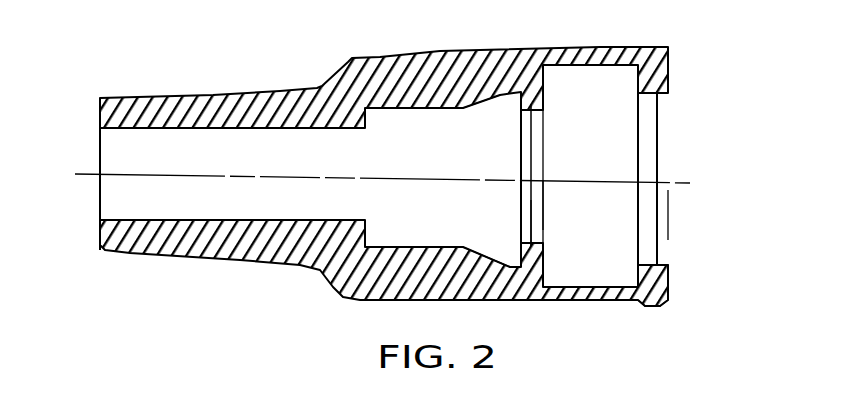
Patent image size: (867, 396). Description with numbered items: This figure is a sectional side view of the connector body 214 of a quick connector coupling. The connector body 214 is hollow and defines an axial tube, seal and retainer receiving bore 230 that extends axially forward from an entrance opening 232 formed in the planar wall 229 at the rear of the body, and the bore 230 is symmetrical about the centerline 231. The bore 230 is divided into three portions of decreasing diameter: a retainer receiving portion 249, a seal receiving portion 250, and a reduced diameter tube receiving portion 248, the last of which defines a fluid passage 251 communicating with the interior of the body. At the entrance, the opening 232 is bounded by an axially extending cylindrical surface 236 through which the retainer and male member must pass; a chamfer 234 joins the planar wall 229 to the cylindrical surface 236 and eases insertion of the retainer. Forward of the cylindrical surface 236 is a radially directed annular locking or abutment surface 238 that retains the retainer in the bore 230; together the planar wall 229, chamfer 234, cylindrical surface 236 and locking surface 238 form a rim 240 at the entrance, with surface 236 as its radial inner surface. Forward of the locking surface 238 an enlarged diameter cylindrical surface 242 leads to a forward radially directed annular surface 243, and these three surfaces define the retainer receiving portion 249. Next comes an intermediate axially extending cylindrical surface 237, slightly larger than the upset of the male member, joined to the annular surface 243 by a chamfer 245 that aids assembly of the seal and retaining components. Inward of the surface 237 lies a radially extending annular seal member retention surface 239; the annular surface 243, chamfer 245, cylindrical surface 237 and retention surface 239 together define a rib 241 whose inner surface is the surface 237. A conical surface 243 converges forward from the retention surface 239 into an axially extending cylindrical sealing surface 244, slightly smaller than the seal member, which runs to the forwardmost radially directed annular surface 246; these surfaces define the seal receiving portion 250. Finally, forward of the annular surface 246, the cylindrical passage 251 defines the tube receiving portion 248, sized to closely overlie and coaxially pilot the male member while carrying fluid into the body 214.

The connector body 214 is at (240, 76).
The planar wall 229 is at (670, 288).
The bore 230 is at (615, 149).
The centerline 231 is at (628, 182).
The entrance opening 232 is at (674, 215).
The chamfer 234 is at (670, 98).
The axially extending cylindrical surface 236 is at (657, 116).
The intermediate axially extending cylindrical surface 237 is at (543, 210).
The radially directed annular locking surface 238 is at (637, 78).
The radially extending annular seal member retention surface 239 is at (518, 252).
The rim 240 is at (660, 241).
The rib 241 is at (543, 108).
The enlarged diameter cylindrical surface 242 is at (577, 287).
The forward radially directed annular surface 243 is at (492, 98).
The axially extending cylindrical sealing surface 244 is at (388, 110).
The chamfer 245 is at (534, 246).
The forwardmost radially directed annular surface 246 is at (367, 238).
The reduced diameter tube receiving portion 248 is at (232, 174).
The retainer receiving portion 249 is at (590, 176).
The seal receiving portion 250 is at (429, 177).
The cylindrical passage 251 is at (197, 220).